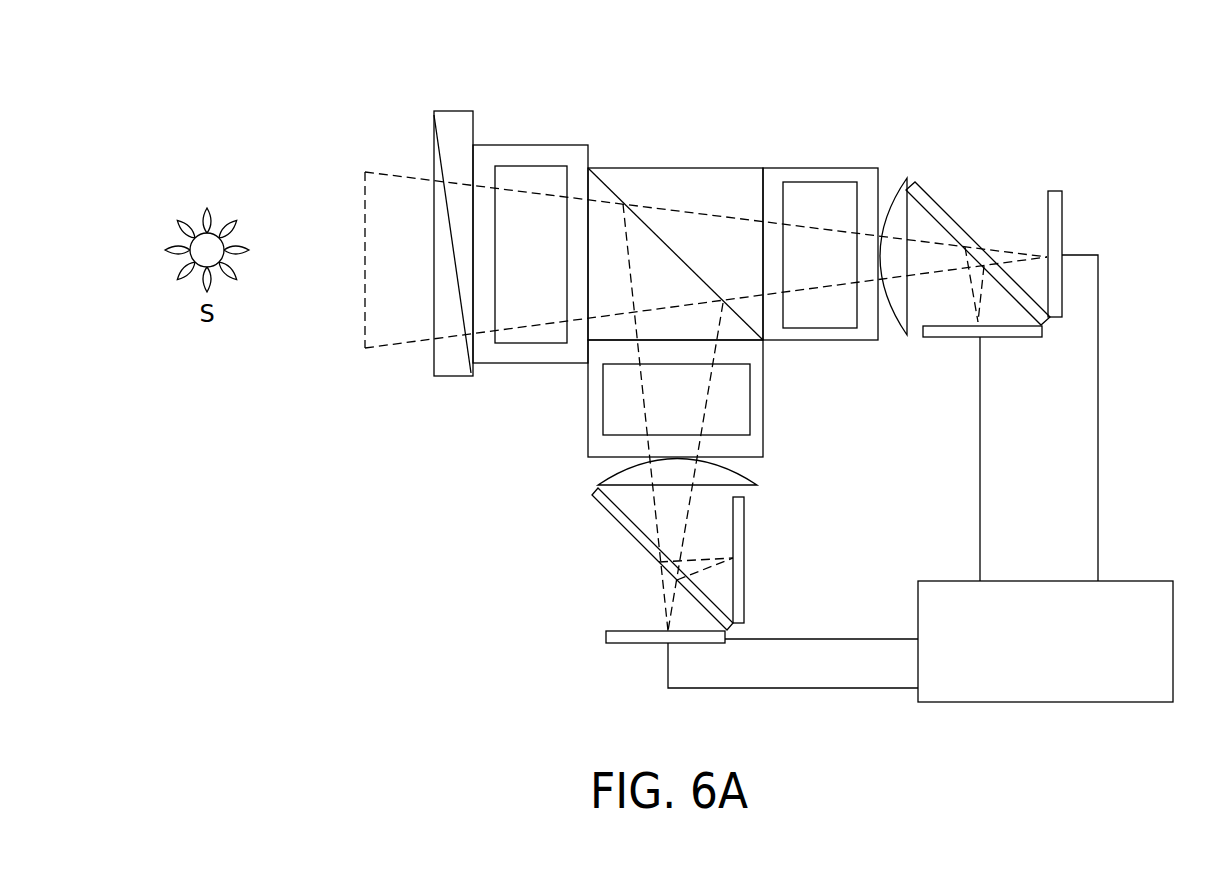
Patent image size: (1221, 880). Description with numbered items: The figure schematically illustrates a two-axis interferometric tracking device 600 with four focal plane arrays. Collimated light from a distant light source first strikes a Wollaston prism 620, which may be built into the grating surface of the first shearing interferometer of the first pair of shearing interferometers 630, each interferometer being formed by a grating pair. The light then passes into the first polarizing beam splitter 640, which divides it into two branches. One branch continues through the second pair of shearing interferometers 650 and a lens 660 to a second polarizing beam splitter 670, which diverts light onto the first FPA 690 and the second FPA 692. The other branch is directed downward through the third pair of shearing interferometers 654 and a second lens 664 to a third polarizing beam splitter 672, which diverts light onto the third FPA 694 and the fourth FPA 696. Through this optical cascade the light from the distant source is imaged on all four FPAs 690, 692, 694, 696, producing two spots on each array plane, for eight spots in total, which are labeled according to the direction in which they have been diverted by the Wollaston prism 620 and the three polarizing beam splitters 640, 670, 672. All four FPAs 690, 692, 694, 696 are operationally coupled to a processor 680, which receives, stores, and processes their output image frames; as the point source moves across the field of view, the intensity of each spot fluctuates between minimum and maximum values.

The tracking device 600 is at (337, 537).
The Wollaston prism 620 is at (473, 376).
The first pair of shearing interferometers 630 is at (588, 363).
The polarizing beam splitter 640 is at (588, 165).
The second pair of shearing interferometers 650 is at (878, 165).
The third pair of shearing interferometers 654 is at (766, 340).
The lens 660 is at (887, 192).
The lens 664 is at (748, 473).
The polarizing beam splitter 670 is at (935, 193).
The polarizing beam splitter 672 is at (610, 522).
The processor 680 is at (1045, 641).
The first FPA 690 is at (953, 340).
The second FPA 692 is at (1062, 223).
The third FPA 694 is at (630, 645).
The fourth FPA 696 is at (745, 543).